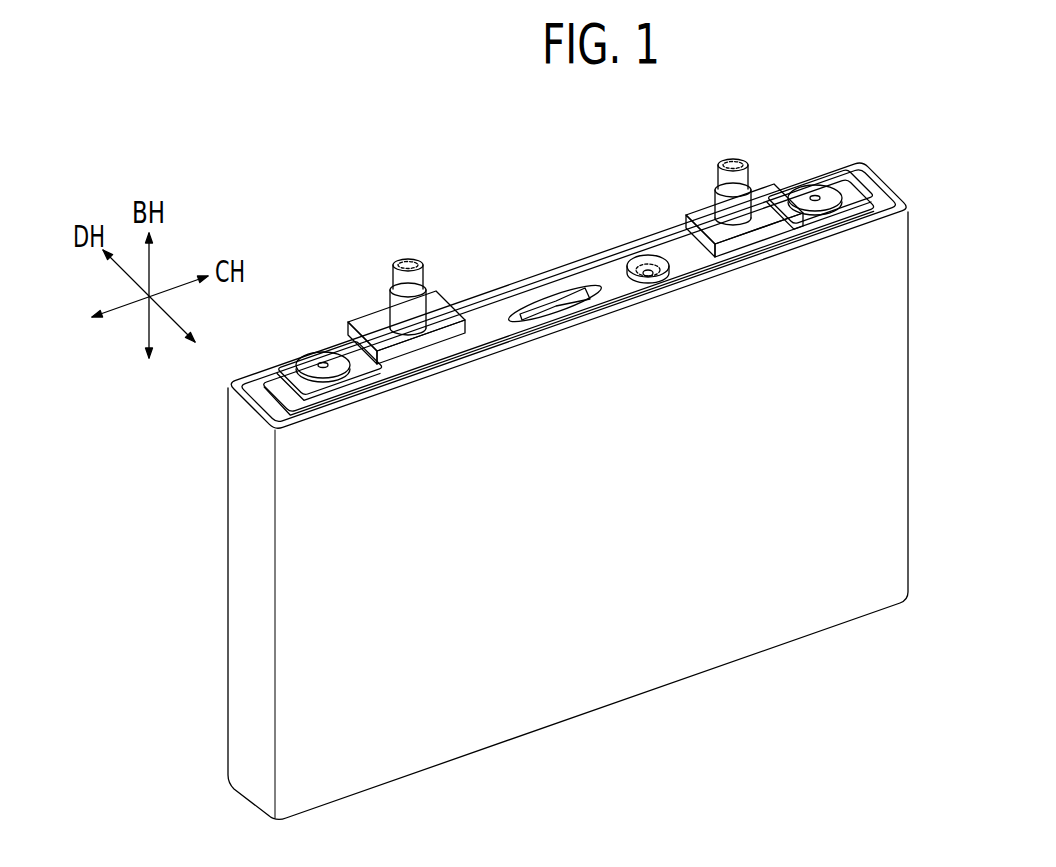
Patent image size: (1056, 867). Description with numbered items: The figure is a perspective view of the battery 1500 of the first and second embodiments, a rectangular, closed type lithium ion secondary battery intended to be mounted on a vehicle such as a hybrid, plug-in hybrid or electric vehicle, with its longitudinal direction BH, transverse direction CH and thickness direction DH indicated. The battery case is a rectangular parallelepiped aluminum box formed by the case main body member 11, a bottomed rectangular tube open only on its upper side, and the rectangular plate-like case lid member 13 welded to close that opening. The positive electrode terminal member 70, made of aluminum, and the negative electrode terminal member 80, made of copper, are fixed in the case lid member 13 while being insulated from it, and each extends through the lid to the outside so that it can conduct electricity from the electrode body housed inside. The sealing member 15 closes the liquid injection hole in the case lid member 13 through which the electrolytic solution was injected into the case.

The battery 1500 is at (322, 188).
The case main body member 11 is at (880, 458).
The case lid member 13 is at (487, 327).
The sealing member 15 is at (644, 254).
The positive electrode terminal member 70 is at (366, 315).
The negative electrode terminal member 80 is at (762, 186).